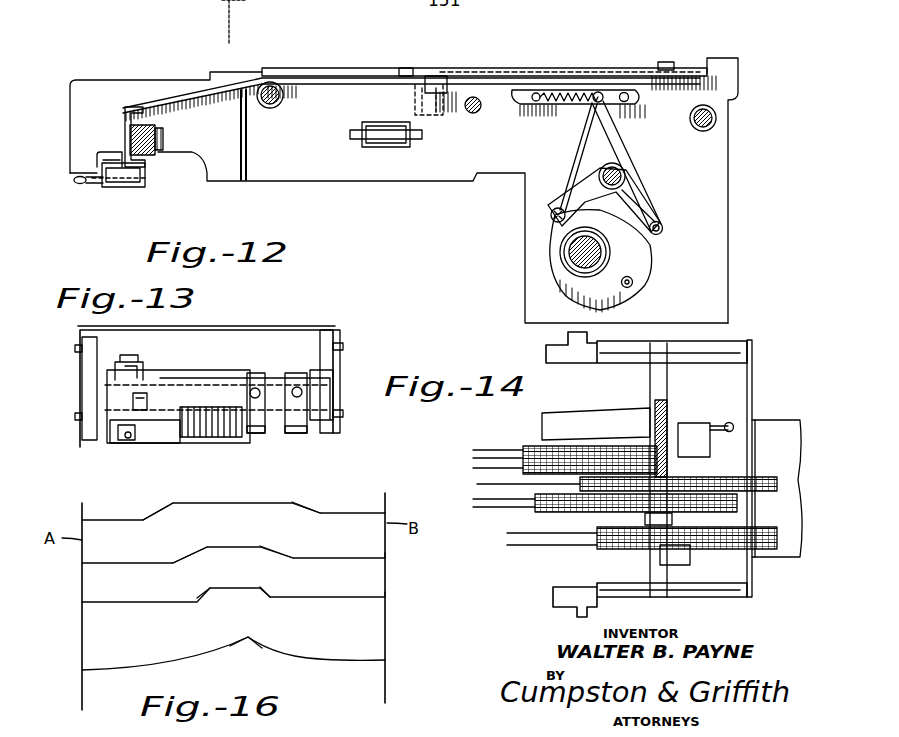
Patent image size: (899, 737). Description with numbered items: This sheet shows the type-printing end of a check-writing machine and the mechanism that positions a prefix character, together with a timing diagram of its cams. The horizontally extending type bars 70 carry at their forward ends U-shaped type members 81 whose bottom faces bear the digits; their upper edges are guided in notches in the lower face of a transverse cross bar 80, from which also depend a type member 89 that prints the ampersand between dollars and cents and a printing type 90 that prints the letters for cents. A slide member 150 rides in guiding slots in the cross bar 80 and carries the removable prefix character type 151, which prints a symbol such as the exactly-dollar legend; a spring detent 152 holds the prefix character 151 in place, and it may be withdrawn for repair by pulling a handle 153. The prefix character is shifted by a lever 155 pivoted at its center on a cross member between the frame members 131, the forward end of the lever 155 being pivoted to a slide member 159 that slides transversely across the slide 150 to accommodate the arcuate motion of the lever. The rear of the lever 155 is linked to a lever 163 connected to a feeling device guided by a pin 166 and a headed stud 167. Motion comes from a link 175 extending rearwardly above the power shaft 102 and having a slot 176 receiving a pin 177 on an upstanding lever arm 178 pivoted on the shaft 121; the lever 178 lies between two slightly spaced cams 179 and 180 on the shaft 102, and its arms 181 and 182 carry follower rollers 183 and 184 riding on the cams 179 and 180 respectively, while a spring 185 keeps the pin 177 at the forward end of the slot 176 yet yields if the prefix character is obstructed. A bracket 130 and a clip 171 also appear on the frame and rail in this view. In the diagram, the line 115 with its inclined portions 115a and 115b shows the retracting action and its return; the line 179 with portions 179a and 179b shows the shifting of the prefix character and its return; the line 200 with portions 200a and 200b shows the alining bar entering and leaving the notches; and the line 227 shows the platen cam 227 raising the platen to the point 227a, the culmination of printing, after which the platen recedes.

In FIG. 13, the type bars 70 is at (215, 412).
In FIG. 14, the type bars 70 is at (483, 492).
In FIG. 12, the cross bar 80 is at (156, 136).
In FIG. 13, the cross bar 80 is at (190, 380).
In FIG. 14, the cross bar 80 is at (657, 384).
In FIG. 13, the type members 81 is at (242, 430).
In FIG. 14, the type members 81 is at (733, 477).
In FIG. 13, the type member 89 is at (258, 378).
In FIG. 14, the type member 89 is at (653, 518).
In FIG. 13, the printing type 90 is at (298, 378).
In FIG. 14, the printing type 90 is at (660, 555).
In FIG. 12, the power shaft 102 is at (580, 264).
In FIG. 16, the line representing action of cams 115 is at (240, 503).
In FIG. 16, the inclined portion 115a is at (153, 505).
In FIG. 16, the inclined line 115b is at (304, 503).
In FIG. 12, the shaft 121 is at (617, 180).
In FIG. 12, the bracket 130 is at (364, 136).
In FIG. 12, the frame members 131 is at (397, 165).
In FIG. 13, the frame members 131 is at (80, 362).
In FIG. 14, the frame members 131 is at (605, 353).
In FIG. 12, the slide member 150 is at (127, 127).
In FIG. 13, the slide member 150 is at (165, 390).
In FIG. 12, the prefix character type 151 is at (126, 180).
In FIG. 13, the prefix character type 151 is at (140, 445).
In FIG. 14, the prefix character type 151 is at (673, 408).
In FIG. 12, the spring detent 152 is at (103, 156).
In FIG. 13, the spring detent 152 is at (136, 400).
In FIG. 12, the handle 153 is at (78, 184).
In FIG. 12, the lever 155 is at (310, 80).
In FIG. 13, the lever 155 is at (128, 366).
In FIG. 14, the lever 155 is at (600, 420).
In FIG. 13, the slide member 159 is at (140, 378).
In FIG. 12, the lever 163 is at (496, 73).
In FIG. 12, the pin 166 is at (702, 62).
In FIG. 12, the headed stud 167 is at (666, 62).
In FIG. 12, the clip 171 is at (472, 82).
In FIG. 12, the link 175 is at (520, 108).
In FIG. 12, the slot 176 is at (636, 101).
In FIG. 12, the pin 177 is at (597, 104).
In FIG. 12, the lever arm 178 is at (603, 143).
In FIG. 12, the cam 179 is at (636, 276).
In FIG. 16, the cam 179 is at (235, 547).
In FIG. 16, the inclined portion 179a is at (190, 551).
In FIG. 16, the inclined portion 179b is at (283, 554).
In FIG. 12, the cam 180 is at (646, 246).
In FIG. 12, the arm 181 is at (582, 200).
In FIG. 12, the arm 182 is at (645, 202).
In FIG. 12, the follower roller 183 is at (552, 215).
In FIG. 12, the follower roller 184 is at (659, 222).
In FIG. 12, the spring 185 is at (553, 105).
In FIG. 16, the cam 200 is at (235, 590).
In FIG. 16, the inclined portion 200a is at (203, 588).
In FIG. 16, the inclined portion 200b is at (270, 591).
In FIG. 16, the platen cam 227 is at (133, 666).
In FIG. 16, the point of culmination 227a is at (250, 639).